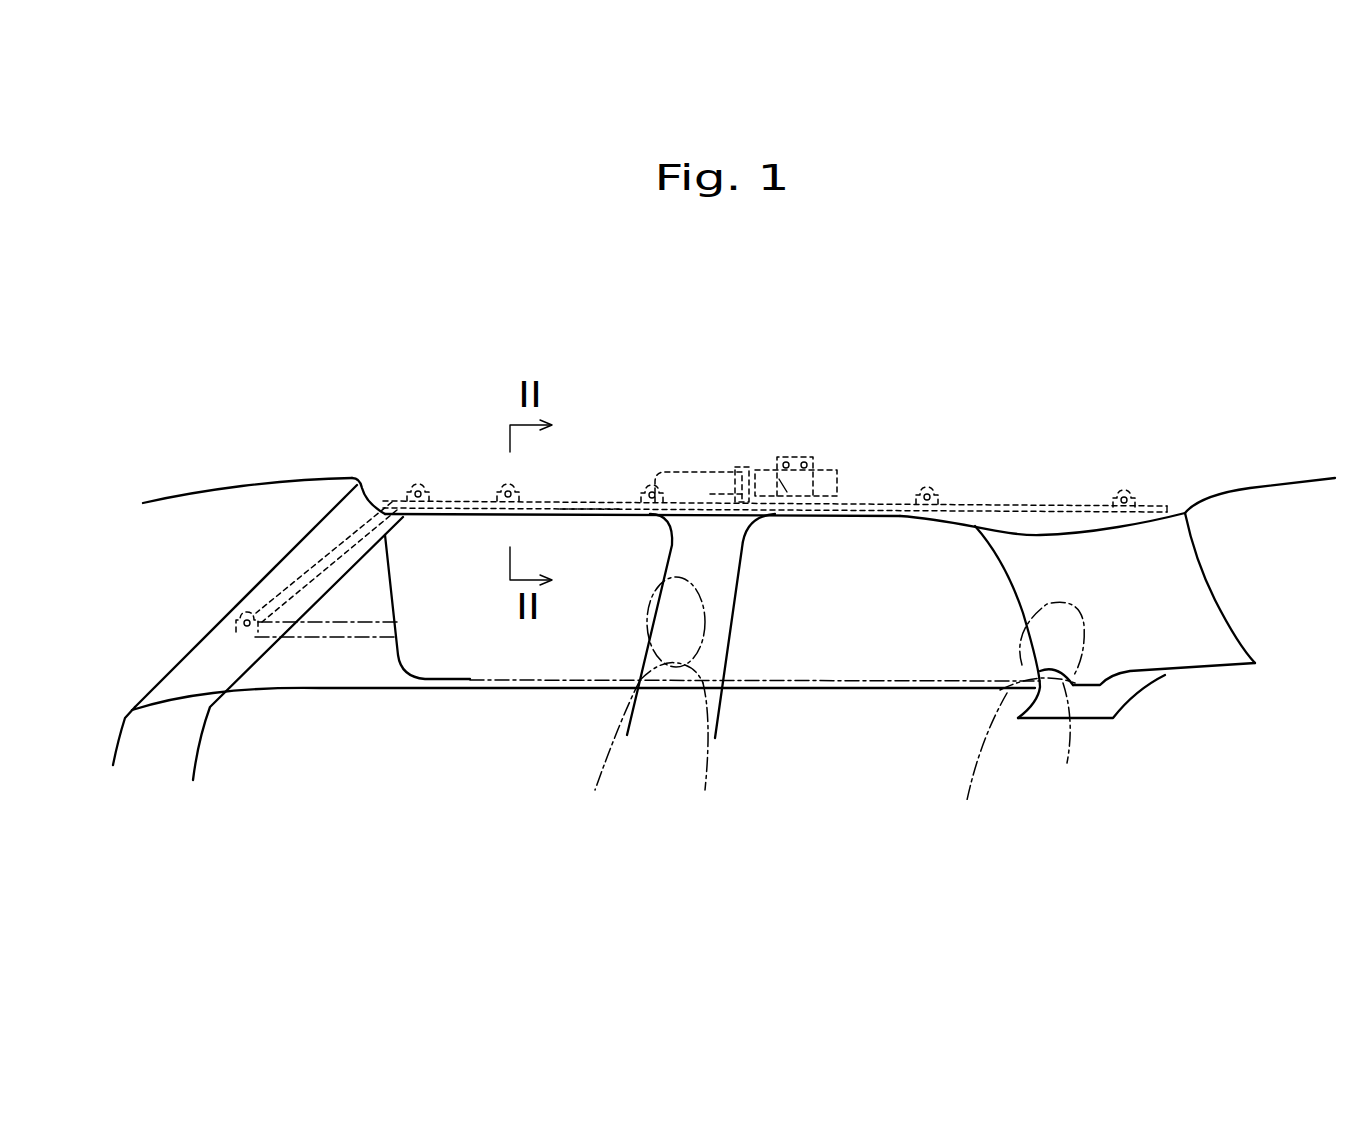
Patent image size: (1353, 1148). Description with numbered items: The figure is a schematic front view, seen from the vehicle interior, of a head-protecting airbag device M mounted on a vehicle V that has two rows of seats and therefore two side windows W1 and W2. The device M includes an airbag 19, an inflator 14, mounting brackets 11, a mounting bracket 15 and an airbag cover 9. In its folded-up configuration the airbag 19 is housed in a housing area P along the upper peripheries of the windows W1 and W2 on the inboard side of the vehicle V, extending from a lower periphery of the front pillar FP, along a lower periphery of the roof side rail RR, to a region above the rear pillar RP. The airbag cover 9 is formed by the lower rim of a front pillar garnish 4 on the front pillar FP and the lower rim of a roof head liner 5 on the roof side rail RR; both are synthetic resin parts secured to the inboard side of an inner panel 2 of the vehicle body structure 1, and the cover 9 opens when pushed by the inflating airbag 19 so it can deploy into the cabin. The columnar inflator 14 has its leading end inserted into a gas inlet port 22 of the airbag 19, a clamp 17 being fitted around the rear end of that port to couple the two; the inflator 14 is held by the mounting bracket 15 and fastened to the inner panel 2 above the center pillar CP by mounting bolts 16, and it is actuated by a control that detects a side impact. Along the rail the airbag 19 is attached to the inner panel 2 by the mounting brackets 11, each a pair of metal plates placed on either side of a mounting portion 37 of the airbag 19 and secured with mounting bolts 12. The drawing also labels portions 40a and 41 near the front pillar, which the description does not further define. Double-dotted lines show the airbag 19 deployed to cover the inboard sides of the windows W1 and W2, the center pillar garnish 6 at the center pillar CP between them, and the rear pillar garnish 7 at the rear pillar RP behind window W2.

The vehicle body structure 1 is at (290, 567).
The inner panel 2 is at (1034, 490).
The front pillar garnish 4 is at (218, 633).
The roof head liner 5 is at (858, 492).
The center pillar garnish 6 is at (722, 575).
The rear pillar garnish 7 is at (1202, 598).
The airbag cover 9 is at (255, 640).
The mounting brackets 11 is at (405, 483).
The mounting bolts 12 is at (415, 482).
The inflator 14 is at (823, 457).
The mounting bracket 15 is at (783, 483).
The mounting bolts 16 is at (789, 456).
The clamp 17 is at (738, 467).
The airbag 19 is at (585, 497).
The gas inlet port 22 is at (703, 468).
The mounting portions 37 is at (503, 483).
The front mounting portion 40a is at (250, 612).
The tether 41 is at (320, 637).
The vehicle V is at (1250, 420).
The front pillar FP is at (173, 650).
The center pillar CP is at (737, 622).
The rear pillar RP is at (1242, 612).
The roof side rail RR is at (972, 492).
The housing area P is at (1072, 492).
The head-protecting airbag device M is at (1153, 478).
The window W1 is at (397, 680).
The window W2 is at (883, 673).